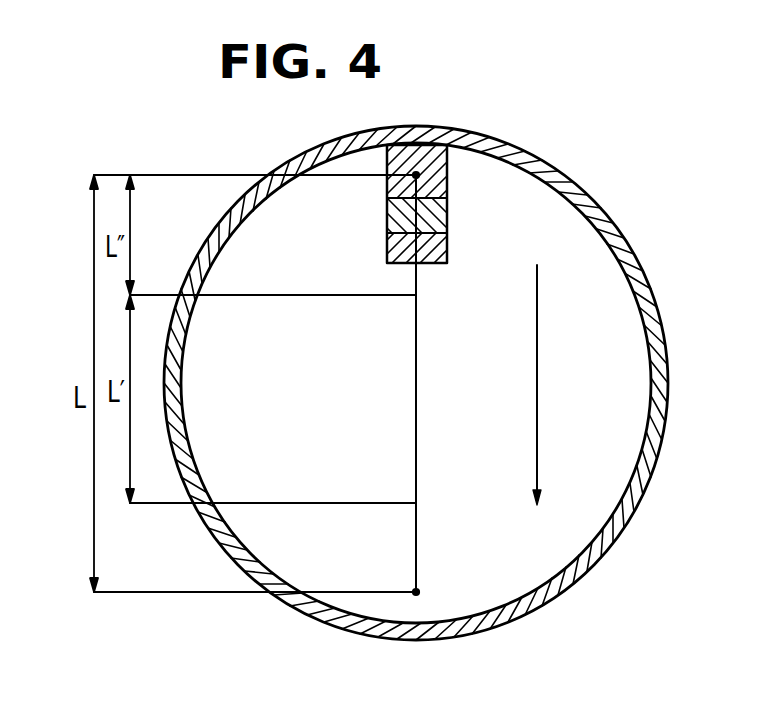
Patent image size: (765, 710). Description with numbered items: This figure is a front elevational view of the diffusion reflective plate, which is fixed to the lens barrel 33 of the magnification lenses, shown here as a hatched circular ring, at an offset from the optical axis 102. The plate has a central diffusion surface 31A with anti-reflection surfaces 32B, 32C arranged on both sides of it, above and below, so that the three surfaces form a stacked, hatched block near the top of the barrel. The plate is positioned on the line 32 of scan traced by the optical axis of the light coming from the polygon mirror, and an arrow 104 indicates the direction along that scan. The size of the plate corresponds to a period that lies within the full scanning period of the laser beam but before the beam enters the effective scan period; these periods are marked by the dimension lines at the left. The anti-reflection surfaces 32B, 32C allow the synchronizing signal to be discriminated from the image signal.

The diffusion surface 31A is at (447, 215).
The line of scan 32 is at (418, 436).
The anti-reflection surface 32B is at (388, 181).
The anti-reflection surface 32C is at (388, 264).
The lens barrel 33 is at (596, 570).
The optical axis 102 is at (418, 345).
The direction of movement 104 is at (539, 341).